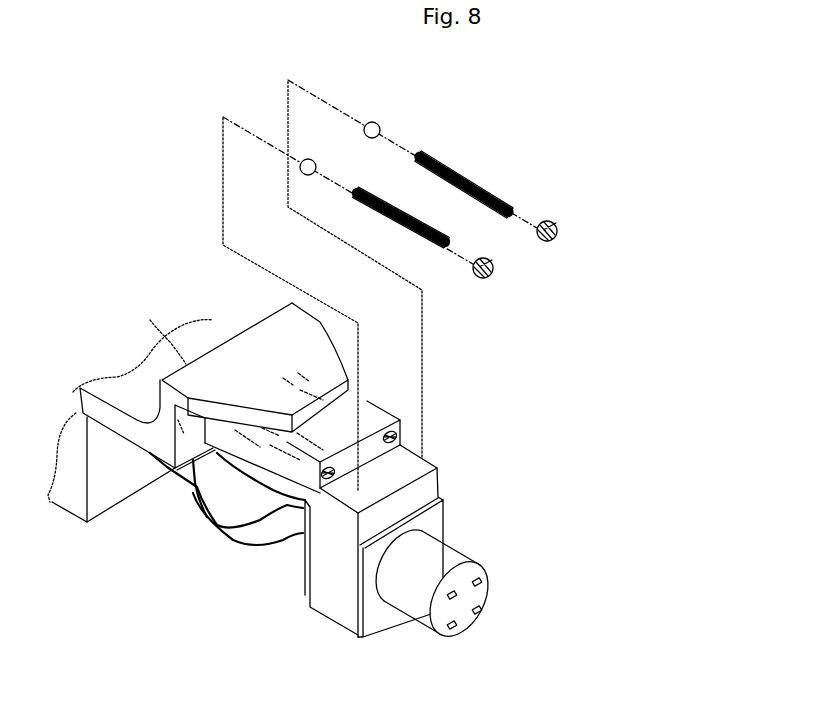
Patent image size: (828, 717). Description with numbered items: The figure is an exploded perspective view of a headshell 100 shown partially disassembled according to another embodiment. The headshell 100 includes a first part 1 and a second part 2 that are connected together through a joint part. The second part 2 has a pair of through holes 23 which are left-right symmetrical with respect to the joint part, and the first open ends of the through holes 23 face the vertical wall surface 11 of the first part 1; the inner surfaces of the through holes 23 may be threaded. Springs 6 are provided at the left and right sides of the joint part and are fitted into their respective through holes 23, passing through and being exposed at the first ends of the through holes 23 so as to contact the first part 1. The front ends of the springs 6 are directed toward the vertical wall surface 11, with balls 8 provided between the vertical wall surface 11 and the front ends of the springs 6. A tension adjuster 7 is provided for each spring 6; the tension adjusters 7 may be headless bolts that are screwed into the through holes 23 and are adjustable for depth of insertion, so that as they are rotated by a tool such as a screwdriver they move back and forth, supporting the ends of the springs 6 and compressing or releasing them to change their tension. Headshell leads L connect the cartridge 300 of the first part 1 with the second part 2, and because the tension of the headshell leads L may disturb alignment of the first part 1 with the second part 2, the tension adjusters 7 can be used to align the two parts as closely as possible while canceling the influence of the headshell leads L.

The headshell 100 is at (152, 115).
The first part 1 is at (193, 374).
The vertical wall surface 11 is at (135, 381).
The second part 2 is at (422, 488).
The through holes 23 is at (398, 435).
The springs 6 is at (468, 173).
The tension adjusters 7 is at (547, 219).
The balls 8 is at (373, 122).
The headshell leads L is at (245, 531).
The cartridge 300 is at (73, 498).